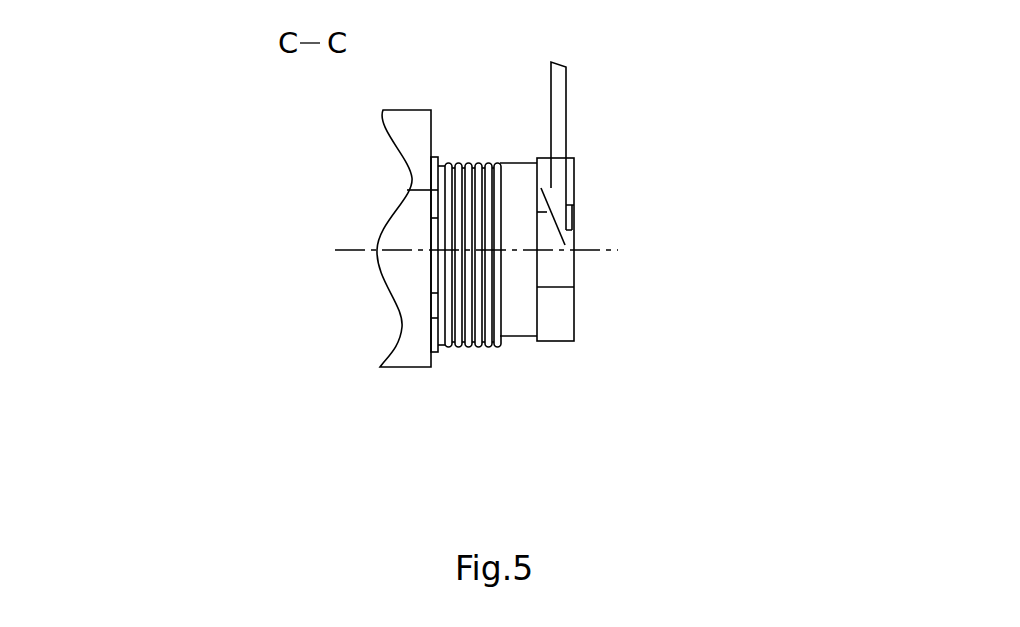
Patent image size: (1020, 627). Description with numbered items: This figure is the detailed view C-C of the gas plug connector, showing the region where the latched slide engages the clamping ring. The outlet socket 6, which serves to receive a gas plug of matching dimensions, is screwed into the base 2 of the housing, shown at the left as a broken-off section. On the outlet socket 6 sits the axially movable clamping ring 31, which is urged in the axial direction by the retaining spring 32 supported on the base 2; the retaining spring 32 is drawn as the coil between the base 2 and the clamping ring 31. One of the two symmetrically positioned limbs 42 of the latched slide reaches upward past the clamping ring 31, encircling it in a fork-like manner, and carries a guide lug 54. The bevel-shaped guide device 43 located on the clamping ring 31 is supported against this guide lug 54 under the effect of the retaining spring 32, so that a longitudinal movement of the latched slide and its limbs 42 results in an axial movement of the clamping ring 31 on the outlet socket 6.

The base 2 is at (257, 238).
The outlet socket 6 is at (306, 243).
The retaining spring 32 is at (288, 255).
The clamping ring 31 is at (708, 271).
The limbs 42 is at (715, 146).
The guide lug 54 is at (708, 214).
The guide device 43 is at (710, 251).